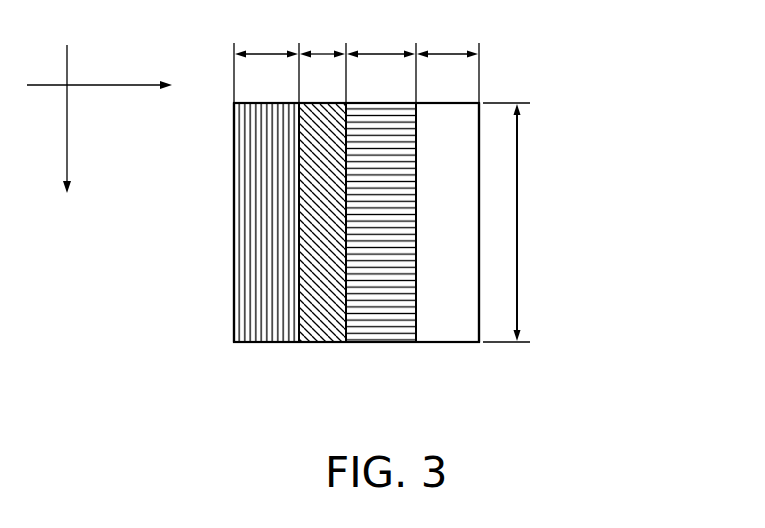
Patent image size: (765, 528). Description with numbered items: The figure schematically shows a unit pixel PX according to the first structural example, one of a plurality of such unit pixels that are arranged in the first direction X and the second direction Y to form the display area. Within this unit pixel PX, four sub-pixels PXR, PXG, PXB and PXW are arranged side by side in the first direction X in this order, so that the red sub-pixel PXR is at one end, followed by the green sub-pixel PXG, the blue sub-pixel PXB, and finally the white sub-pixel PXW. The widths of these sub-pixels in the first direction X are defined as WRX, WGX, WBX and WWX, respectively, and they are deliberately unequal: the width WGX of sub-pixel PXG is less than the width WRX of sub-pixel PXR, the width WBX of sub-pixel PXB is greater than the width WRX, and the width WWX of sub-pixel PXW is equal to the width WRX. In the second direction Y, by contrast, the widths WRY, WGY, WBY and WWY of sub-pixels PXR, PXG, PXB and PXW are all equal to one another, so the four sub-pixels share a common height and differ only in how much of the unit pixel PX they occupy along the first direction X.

The unit pixel PX is at (504, 82).
The sub-pixel PXR is at (260, 342).
The sub-pixel PXG is at (320, 342).
The sub-pixel PXB is at (382, 342).
The sub-pixel PXW is at (450, 342).
The width of sub-pixel PXR in the first direction WRX is at (266, 59).
The width of sub-pixel PXG in the first direction WGX is at (324, 59).
The width of sub-pixel PXB in the first direction WBX is at (381, 59).
The width of sub-pixel PXW in the first direction WWX is at (448, 59).
The width of sub-pixel PXR in the second direction WRY is at (527, 222).
The width of sub-pixel PXG in the second direction WGY is at (545, 222).
The width of sub-pixel PXB in the second direction WBY is at (544, 222).
The width of sub-pixel PXW in the second direction WWY is at (548, 222).
The first direction X is at (109, 86).
The second direction Y is at (64, 134).